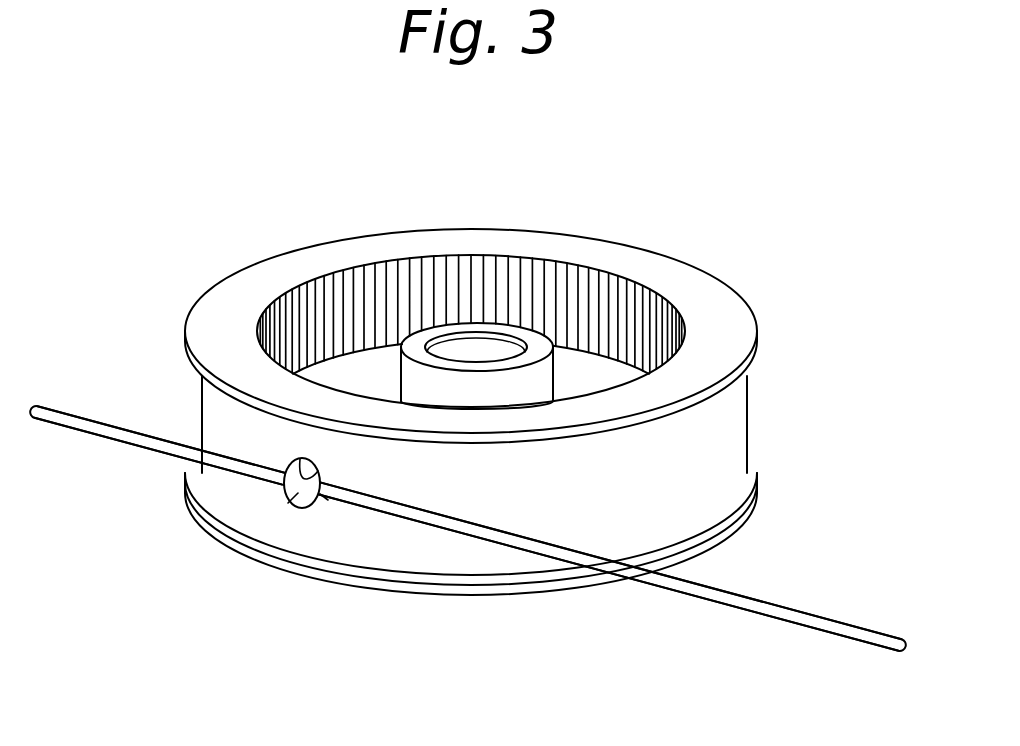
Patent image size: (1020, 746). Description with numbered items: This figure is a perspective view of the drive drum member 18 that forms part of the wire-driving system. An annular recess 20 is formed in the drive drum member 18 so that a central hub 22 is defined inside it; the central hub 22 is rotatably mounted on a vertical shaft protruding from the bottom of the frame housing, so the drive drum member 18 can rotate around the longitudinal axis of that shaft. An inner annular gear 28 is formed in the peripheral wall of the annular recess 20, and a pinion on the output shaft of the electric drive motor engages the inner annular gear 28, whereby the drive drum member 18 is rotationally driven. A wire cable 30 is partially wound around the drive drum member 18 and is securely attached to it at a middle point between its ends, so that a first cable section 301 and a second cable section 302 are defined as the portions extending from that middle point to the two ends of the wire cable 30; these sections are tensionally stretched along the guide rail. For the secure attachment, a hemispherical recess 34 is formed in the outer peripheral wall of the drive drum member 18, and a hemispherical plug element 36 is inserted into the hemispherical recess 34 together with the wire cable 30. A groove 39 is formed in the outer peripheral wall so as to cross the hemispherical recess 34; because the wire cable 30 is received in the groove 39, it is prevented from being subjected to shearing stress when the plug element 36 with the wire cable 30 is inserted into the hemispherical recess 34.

The drive drum member 18 is at (707, 265).
The annular recess 20 is at (591, 388).
The central hub 22 is at (540, 340).
The inner annular gear 28 is at (421, 295).
The wire cable 30 is at (664, 594).
The first cable section 301 is at (104, 426).
The second cable section 302 is at (775, 607).
The hemispherical recess 34 is at (320, 469).
The hemispherical plug element 36 is at (298, 493).
The groove 39 is at (326, 500).